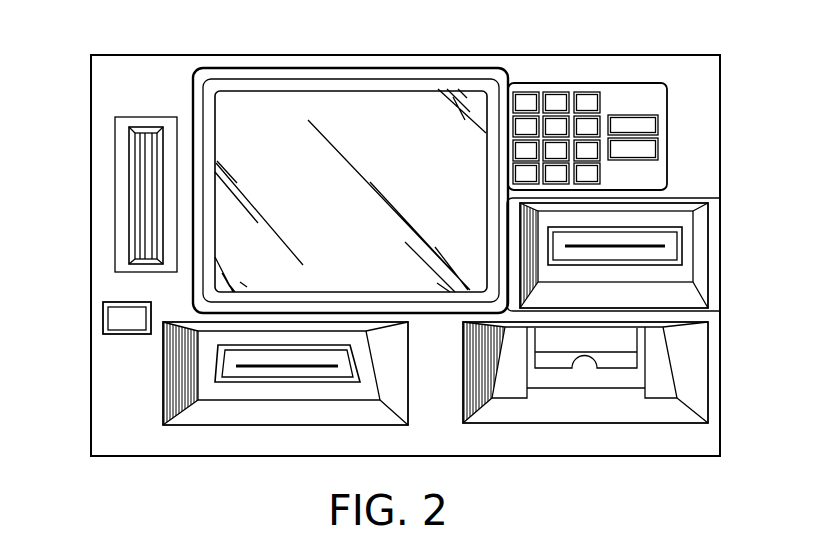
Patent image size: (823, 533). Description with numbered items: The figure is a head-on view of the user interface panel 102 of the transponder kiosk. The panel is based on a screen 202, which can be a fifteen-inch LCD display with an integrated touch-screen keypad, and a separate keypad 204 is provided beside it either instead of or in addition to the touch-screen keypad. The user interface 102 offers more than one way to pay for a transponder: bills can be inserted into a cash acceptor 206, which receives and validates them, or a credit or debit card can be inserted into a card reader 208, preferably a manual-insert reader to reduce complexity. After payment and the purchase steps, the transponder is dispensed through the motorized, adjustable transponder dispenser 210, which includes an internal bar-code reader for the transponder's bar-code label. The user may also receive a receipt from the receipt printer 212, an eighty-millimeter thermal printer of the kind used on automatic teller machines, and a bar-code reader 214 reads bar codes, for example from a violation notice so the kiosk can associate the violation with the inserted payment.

The user interface panel 102 is at (86, 403).
The screen 202 is at (233, 102).
The keypad 204 is at (630, 93).
The cash acceptor 206 is at (700, 252).
The card reader 208 is at (132, 170).
The transponder dispenser 210 is at (200, 425).
The receipt printer 212 is at (653, 423).
The bar-code reader 214 is at (108, 310).